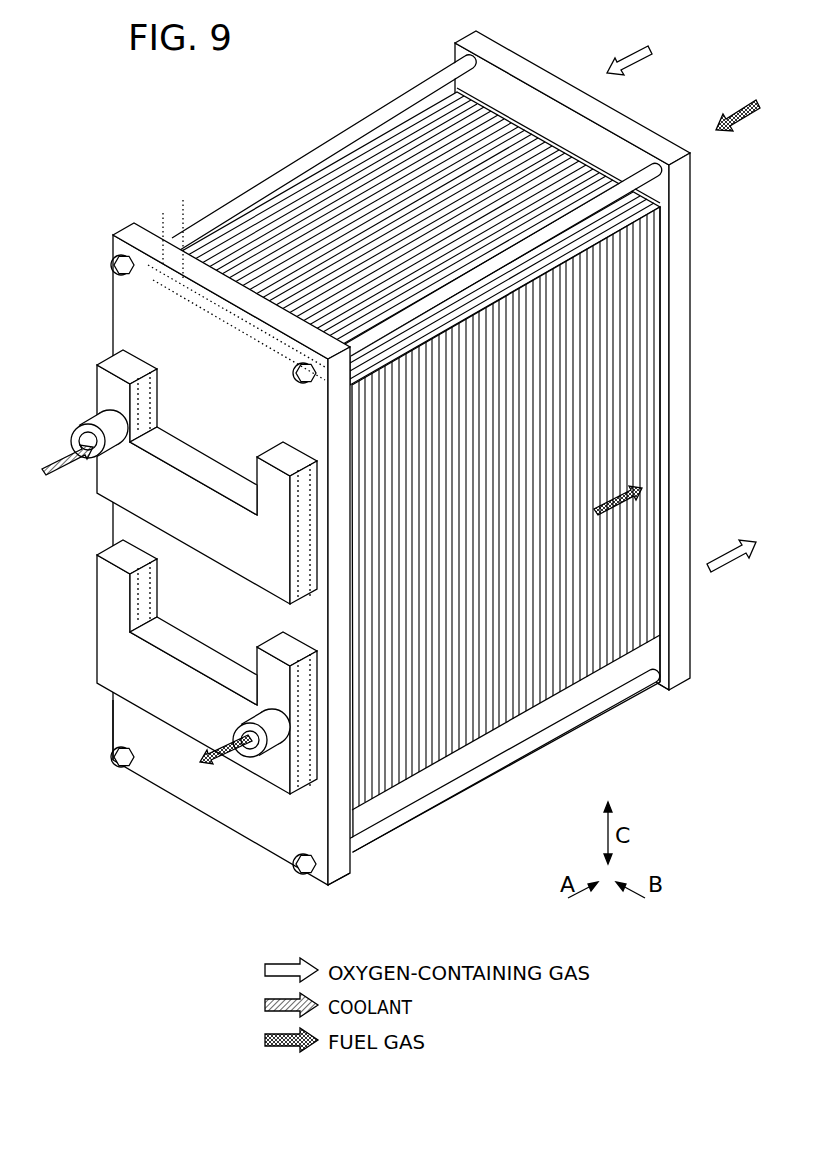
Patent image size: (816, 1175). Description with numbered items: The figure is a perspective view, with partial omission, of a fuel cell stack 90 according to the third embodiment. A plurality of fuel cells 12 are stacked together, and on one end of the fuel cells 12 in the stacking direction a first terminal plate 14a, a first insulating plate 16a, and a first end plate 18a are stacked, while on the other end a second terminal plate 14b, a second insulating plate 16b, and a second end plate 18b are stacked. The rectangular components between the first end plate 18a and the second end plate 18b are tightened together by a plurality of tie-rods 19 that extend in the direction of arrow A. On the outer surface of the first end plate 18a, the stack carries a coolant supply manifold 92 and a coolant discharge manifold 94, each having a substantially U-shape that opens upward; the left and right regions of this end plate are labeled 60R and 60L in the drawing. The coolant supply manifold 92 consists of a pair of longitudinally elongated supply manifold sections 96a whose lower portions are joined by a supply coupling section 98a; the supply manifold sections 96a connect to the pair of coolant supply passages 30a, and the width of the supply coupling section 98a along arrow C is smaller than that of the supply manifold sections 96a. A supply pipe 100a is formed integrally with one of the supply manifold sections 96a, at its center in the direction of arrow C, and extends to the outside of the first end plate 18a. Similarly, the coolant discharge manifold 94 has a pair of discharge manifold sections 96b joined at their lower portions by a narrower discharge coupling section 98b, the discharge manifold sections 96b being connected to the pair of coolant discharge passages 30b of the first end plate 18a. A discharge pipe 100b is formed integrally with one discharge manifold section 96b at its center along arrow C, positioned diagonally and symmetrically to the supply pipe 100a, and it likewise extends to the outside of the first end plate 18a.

The fuel cell stack 90 is at (249, 97).
The fuel cells 12 is at (287, 183).
The first terminal plate 14a is at (239, 281).
The second terminal plate 14b is at (654, 292).
The first insulating plate 16a is at (229, 282).
The second insulating plate 16b is at (664, 268).
The first end plate 18a is at (116, 233).
The second end plate 18b is at (546, 82).
The tie-rods 19 is at (384, 121).
The coolant supply passages 30a is at (152, 392).
The coolant discharge passages 30b is at (151, 583).
The right portion of end plate 60R is at (110, 730).
The left portion of end plate 60L is at (343, 866).
The coolant supply manifold 92 is at (95, 362).
The coolant discharge manifold 94 is at (95, 553).
The supply manifold sections 96a is at (108, 377).
The discharge manifold sections 96b is at (108, 604).
The supply coupling section 98a is at (183, 487).
The discharge coupling section 98b is at (181, 680).
The supply pipe 100a is at (112, 452).
The discharge pipe 100b is at (253, 713).